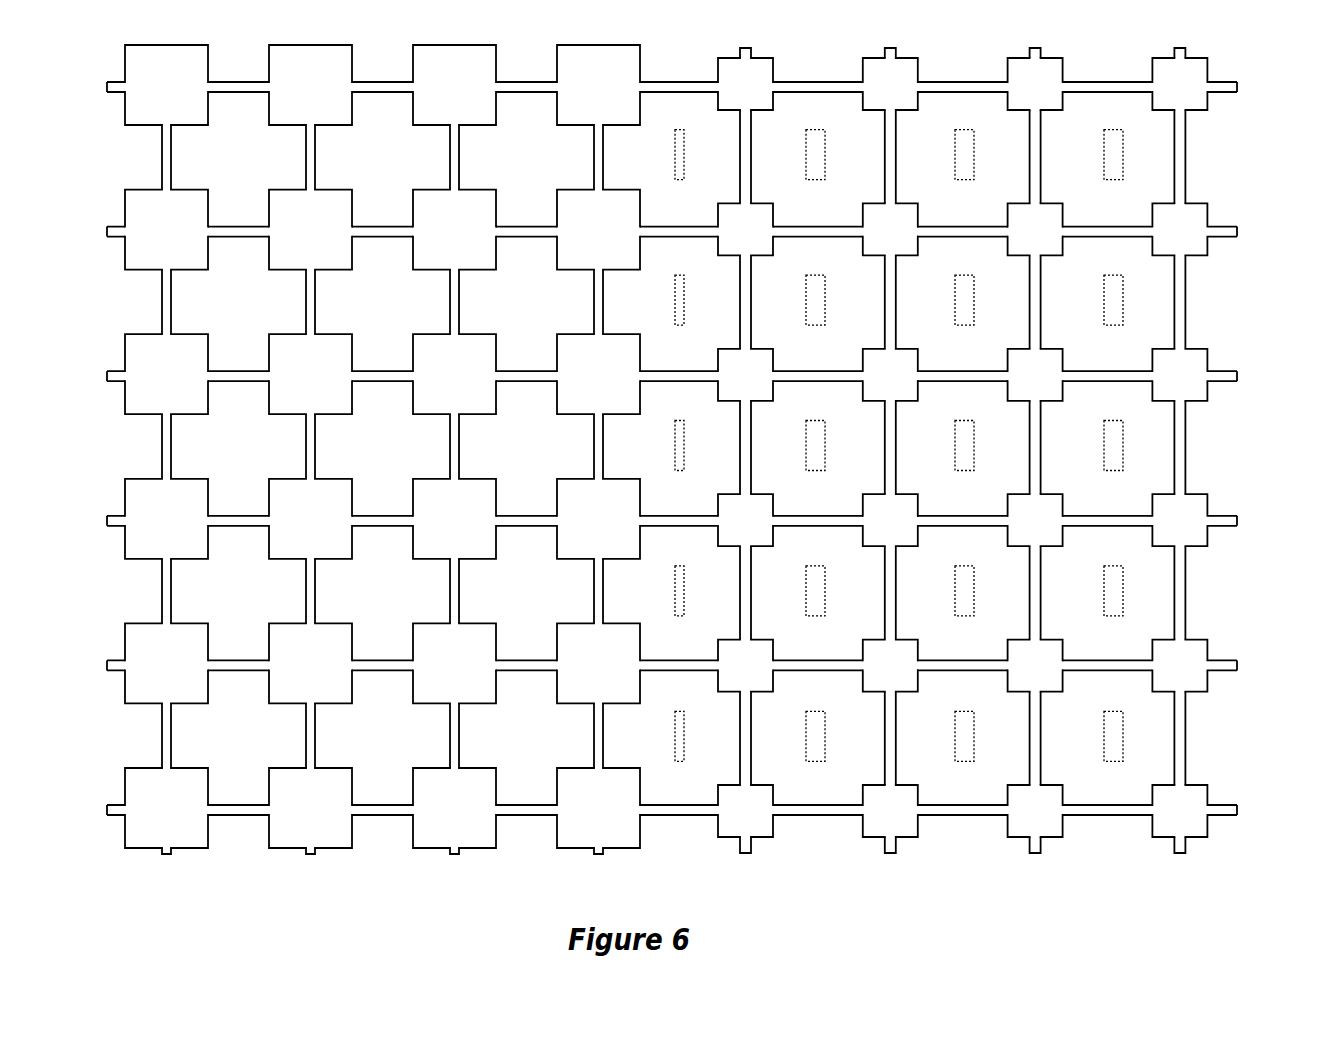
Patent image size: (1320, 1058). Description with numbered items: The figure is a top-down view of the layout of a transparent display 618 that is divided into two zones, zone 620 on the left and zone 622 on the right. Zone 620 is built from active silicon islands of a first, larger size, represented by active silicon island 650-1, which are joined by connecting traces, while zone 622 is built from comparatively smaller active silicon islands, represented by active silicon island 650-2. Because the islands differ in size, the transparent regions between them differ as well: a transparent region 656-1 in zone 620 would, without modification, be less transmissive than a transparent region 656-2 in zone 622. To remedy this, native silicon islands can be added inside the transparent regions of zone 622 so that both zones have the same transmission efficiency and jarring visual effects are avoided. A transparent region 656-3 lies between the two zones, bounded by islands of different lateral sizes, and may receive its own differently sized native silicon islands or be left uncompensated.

The transparent display 618 is at (711, 489).
The zone 620 is at (502, 489).
The zone 622 is at (937, 494).
The active silicon island 650-1 is at (627, 94).
The active silicon island 650-2 is at (720, 90).
The transparent region 656-1 is at (493, 170).
The transparent region 656-2 is at (794, 124).
The transparent region 656-3 is at (657, 124).